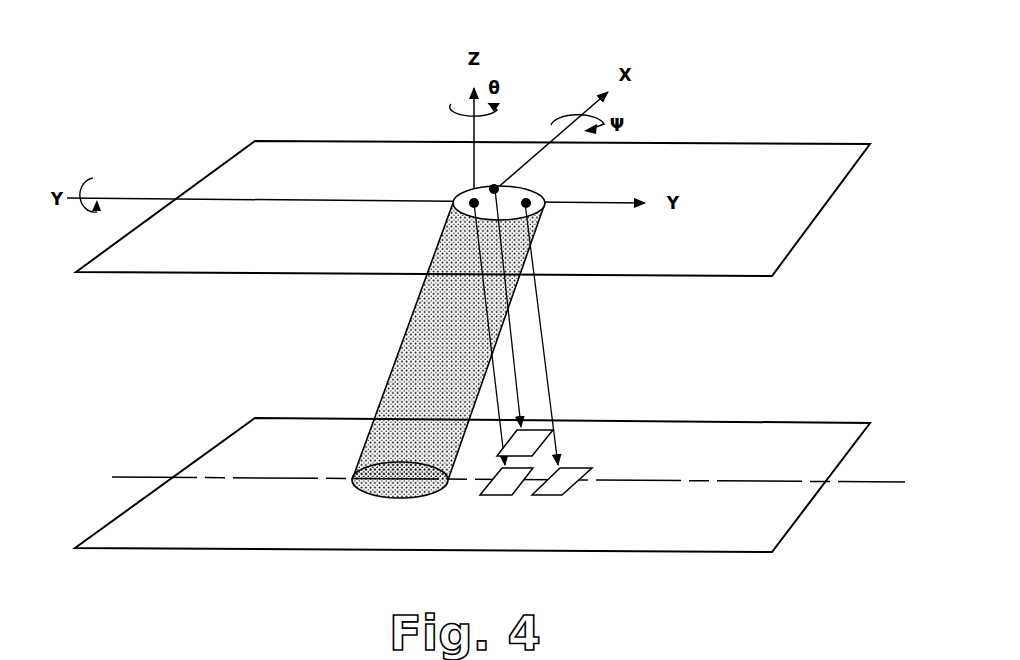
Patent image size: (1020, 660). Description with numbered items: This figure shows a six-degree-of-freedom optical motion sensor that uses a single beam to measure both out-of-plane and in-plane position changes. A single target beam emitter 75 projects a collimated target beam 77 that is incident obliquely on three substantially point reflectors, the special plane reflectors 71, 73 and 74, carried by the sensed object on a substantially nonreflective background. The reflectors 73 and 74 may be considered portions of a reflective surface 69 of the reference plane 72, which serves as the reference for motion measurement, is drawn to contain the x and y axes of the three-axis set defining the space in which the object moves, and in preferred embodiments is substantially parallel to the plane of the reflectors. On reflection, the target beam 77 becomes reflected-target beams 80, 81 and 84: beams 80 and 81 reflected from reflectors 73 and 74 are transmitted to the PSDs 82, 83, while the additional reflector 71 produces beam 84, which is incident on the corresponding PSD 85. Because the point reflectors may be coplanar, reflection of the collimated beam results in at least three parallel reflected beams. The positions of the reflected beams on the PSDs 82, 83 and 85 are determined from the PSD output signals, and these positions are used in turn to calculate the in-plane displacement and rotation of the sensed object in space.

The reflective surface 69 is at (208, 230).
The special plane reflector 71 is at (494, 185).
The reference plane 72 is at (822, 215).
The special plane reflector 73 is at (468, 197).
The special plane reflector 74 is at (528, 196).
The target beam emitter 75 is at (365, 445).
The target beam 77 is at (404, 338).
The reflected-target beam 80 is at (547, 372).
The reflected-target beam 81 is at (503, 430).
The PSD 82 is at (555, 497).
The PSD 83 is at (502, 497).
The reflected-target beam 84 is at (512, 332).
The PSD 85 is at (540, 427).